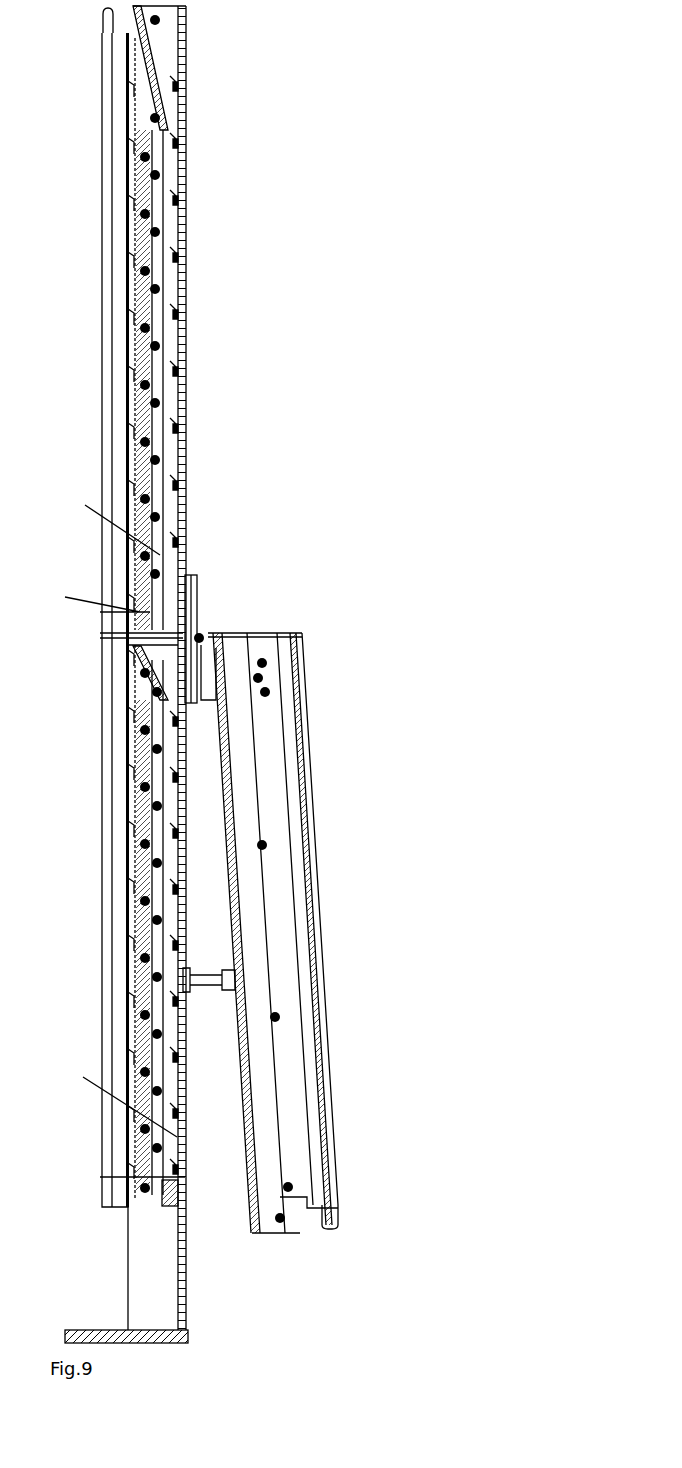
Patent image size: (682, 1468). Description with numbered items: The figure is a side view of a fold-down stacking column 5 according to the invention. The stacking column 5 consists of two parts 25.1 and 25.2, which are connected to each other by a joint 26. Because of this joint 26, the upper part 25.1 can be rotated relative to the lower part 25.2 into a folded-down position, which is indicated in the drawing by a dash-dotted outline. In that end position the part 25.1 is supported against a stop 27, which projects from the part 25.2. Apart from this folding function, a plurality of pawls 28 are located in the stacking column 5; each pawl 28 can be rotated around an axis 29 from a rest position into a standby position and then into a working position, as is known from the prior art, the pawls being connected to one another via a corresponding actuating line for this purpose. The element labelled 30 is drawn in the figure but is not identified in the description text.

The stacking column 5 is at (217, 183).
The part 25.1 is at (263, 90).
The part 25.2 is at (187, 898).
The joint 26 is at (199, 638).
The stop 27 is at (222, 968).
The pawl 28 is at (90, 1177).
The axis 29 is at (175, 1213).
The roller track 30 is at (162, 422).